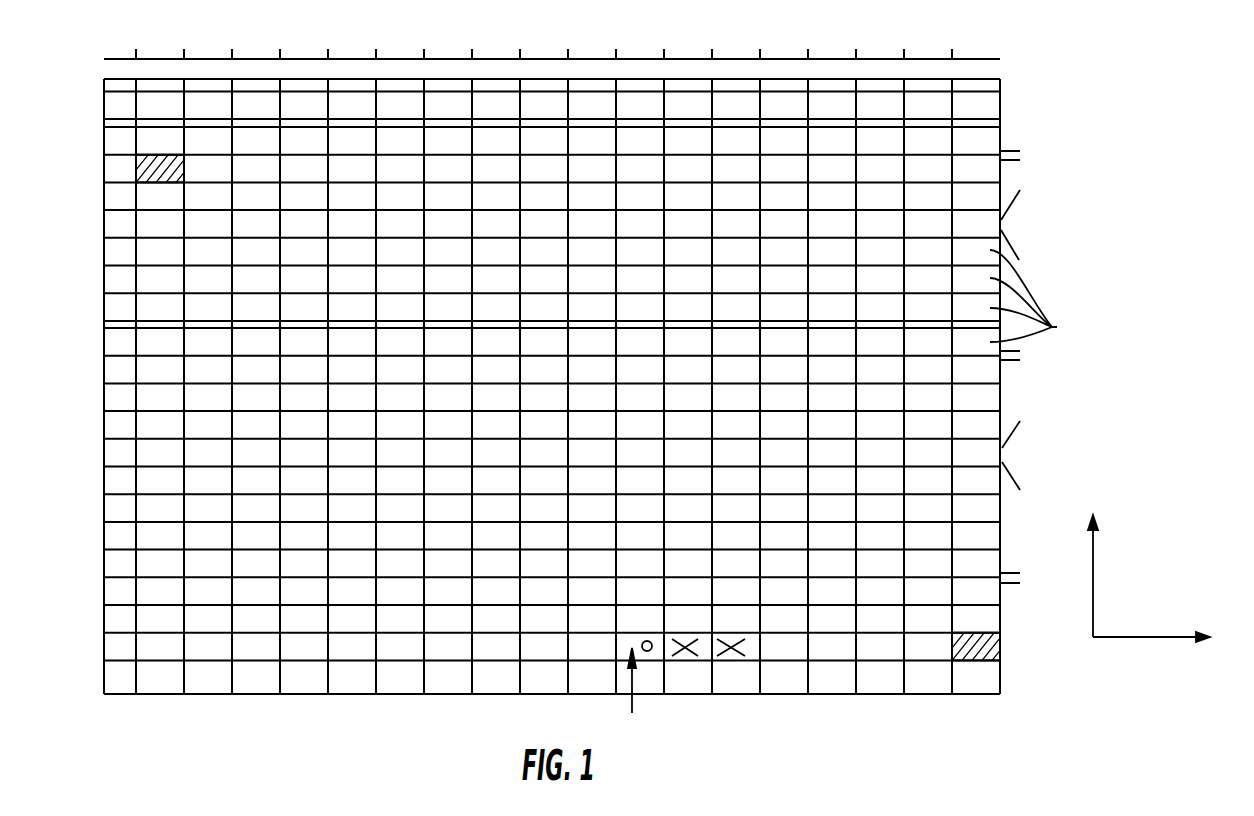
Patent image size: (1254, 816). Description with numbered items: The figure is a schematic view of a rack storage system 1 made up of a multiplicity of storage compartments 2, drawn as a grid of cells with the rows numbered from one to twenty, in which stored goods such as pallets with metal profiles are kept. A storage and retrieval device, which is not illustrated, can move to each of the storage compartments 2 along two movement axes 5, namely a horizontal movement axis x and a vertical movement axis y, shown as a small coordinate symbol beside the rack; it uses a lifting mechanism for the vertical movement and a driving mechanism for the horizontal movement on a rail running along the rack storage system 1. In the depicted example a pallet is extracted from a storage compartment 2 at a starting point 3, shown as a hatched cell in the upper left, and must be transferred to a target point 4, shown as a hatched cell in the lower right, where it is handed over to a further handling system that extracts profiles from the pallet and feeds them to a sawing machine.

The rack storage system 1 is at (1087, 117).
The storage compartments 2 is at (1030, 296).
The starting point 3 is at (162, 165).
The target point 4 is at (972, 655).
The movement axes 5 is at (1157, 567).